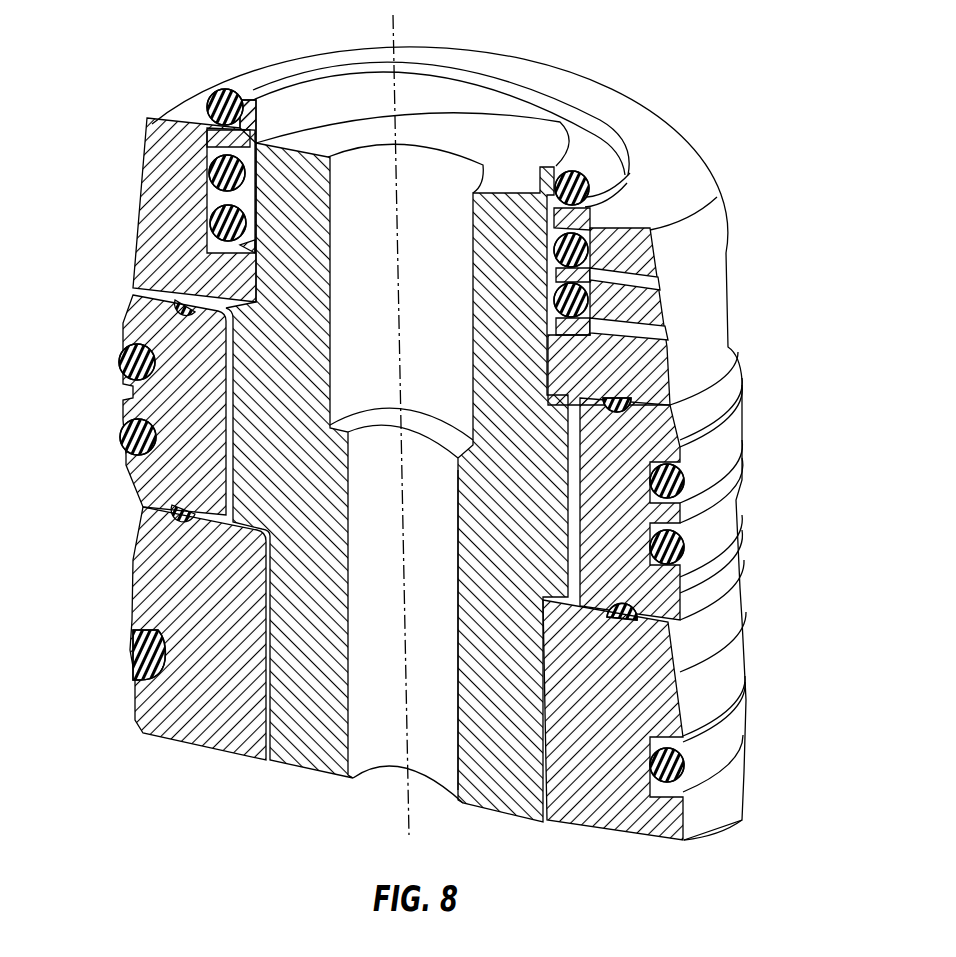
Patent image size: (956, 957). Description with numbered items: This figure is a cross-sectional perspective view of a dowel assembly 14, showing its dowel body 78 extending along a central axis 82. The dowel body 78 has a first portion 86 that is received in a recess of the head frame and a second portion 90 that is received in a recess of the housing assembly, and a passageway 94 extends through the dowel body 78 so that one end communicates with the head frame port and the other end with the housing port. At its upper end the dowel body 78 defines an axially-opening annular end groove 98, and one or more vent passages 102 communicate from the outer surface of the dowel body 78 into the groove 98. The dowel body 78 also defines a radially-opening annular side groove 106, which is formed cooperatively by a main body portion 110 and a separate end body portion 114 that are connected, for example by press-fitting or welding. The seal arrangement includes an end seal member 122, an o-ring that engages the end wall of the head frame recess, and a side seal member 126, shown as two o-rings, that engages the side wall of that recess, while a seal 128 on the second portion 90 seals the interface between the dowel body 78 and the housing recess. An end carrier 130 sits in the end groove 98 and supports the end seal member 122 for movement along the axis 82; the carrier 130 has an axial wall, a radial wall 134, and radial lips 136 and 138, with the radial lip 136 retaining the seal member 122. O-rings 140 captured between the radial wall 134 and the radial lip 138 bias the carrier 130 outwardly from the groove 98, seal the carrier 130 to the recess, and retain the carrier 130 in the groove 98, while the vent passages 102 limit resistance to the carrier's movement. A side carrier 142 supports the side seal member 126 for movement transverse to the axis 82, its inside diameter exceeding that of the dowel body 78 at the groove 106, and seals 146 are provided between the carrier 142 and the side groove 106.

The dowel assembly 14 is at (752, 205).
The dowel body 78 is at (354, 473).
The axis 82 is at (405, 804).
The first portion 86 is at (100, 208).
The second portion 90 is at (100, 640).
The passageway 94 is at (457, 616).
The end groove 98 is at (546, 334).
The vent passages 102 is at (658, 283).
The side groove 106 is at (628, 578).
The main body portion 110 is at (228, 420).
The end body portion 114 is at (128, 575).
The end seal member 122 is at (224, 89).
The side seal member 126 is at (686, 548).
The seal 128 is at (684, 760).
The end carrier 130 is at (557, 215).
The radial wall 134 is at (207, 132).
The radial lip 136 is at (258, 103).
The radial lip 138 is at (246, 200).
The o-rings 140 is at (567, 302).
The side carrier 142 is at (174, 405).
The seals 146 is at (628, 397).